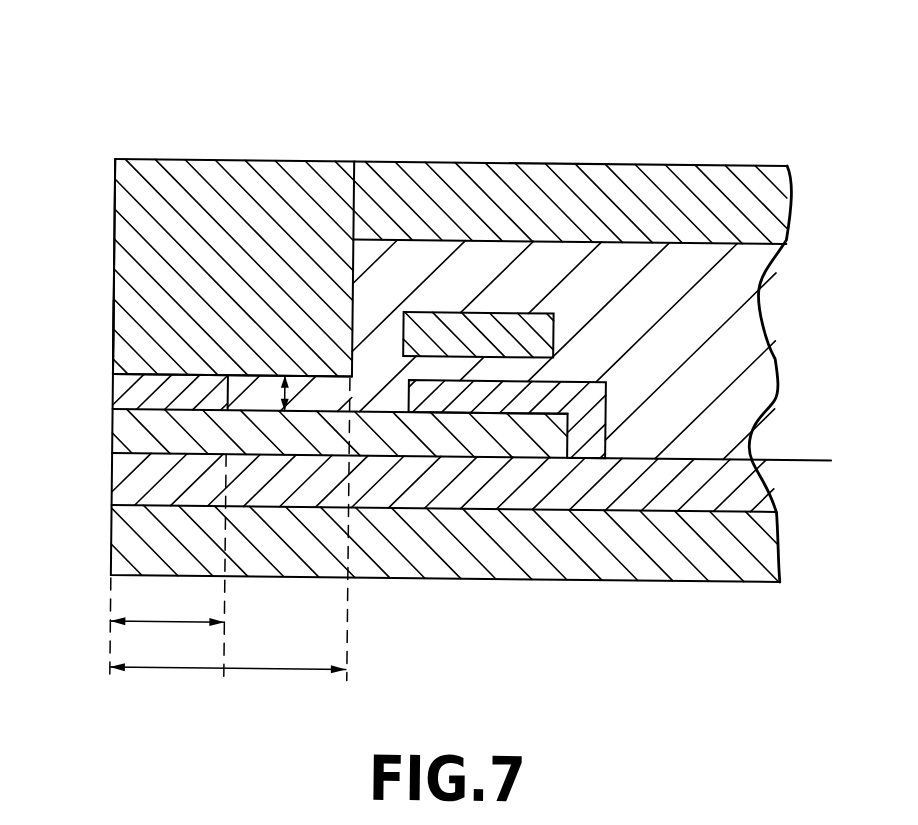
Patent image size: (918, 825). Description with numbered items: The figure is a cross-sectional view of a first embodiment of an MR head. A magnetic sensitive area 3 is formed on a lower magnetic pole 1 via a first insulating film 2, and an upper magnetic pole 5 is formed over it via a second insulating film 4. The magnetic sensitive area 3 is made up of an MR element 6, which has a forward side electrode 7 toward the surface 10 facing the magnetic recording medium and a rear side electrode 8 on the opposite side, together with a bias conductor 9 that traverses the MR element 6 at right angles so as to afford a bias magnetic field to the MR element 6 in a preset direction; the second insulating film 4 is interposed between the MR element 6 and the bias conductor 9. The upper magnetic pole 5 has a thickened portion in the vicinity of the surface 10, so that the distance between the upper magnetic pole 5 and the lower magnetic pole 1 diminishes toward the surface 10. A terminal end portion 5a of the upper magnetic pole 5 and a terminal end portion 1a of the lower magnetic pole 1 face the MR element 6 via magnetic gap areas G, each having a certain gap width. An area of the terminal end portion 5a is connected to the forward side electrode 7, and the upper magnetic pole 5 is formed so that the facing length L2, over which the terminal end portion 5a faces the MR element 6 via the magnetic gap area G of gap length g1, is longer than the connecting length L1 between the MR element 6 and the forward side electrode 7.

The lower magnetic pole 1 is at (757, 546).
The terminal end portion of the lower magnetic pole 1a is at (158, 502).
The first insulating film 2 is at (743, 485).
The magnetic sensitive area 3 is at (625, 375).
The second insulating film 4 is at (745, 285).
The upper magnetic pole 5 is at (786, 183).
The terminal end portion of the upper magnetic pole 5a is at (113, 330).
The MR element 6 is at (452, 437).
The forward side electrode 7 is at (117, 393).
The rear side electrode 8 is at (593, 415).
The bias conductor 9 is at (547, 328).
The surface facing the magnetic recording medium 10 is at (113, 232).
The magnetic gap area G is at (98, 371).
The gap length g1 is at (288, 390).
The connecting length L1 is at (168, 566).
The facing length L2 is at (230, 528).